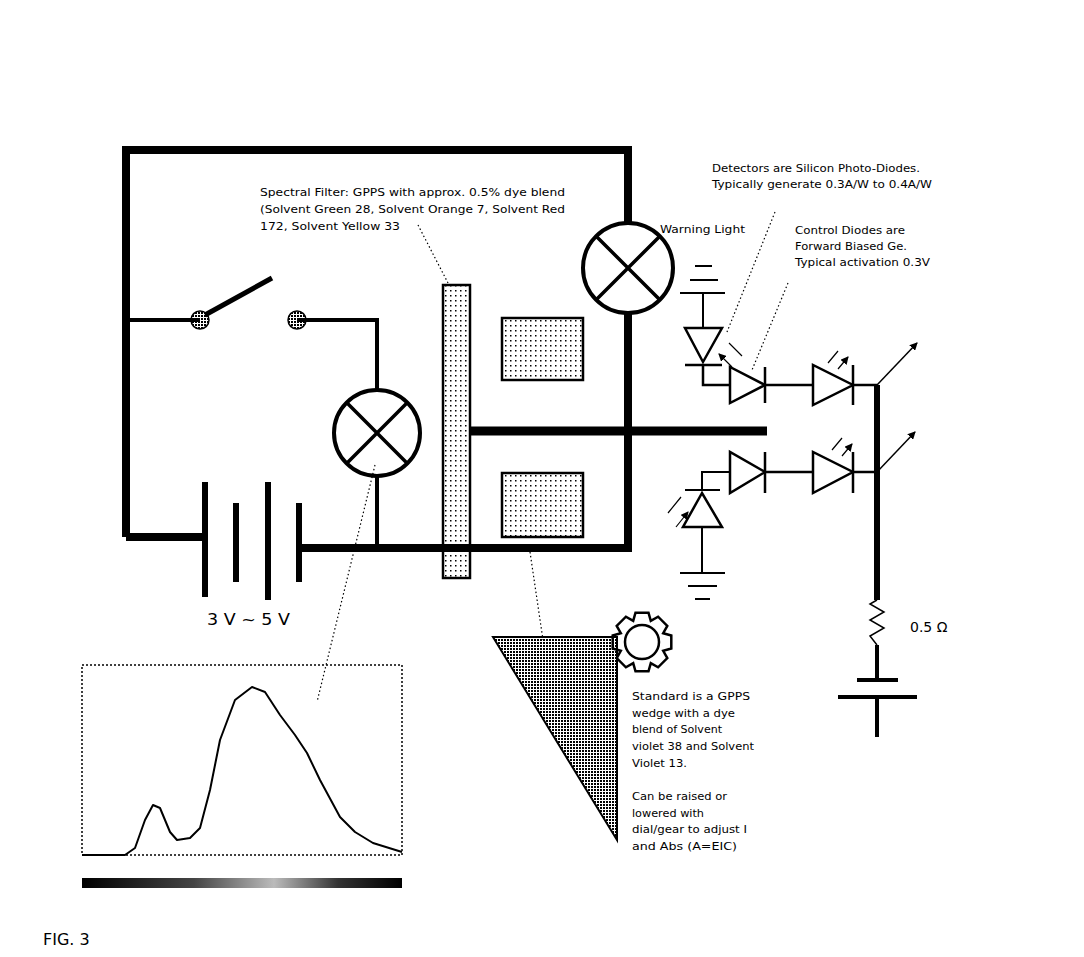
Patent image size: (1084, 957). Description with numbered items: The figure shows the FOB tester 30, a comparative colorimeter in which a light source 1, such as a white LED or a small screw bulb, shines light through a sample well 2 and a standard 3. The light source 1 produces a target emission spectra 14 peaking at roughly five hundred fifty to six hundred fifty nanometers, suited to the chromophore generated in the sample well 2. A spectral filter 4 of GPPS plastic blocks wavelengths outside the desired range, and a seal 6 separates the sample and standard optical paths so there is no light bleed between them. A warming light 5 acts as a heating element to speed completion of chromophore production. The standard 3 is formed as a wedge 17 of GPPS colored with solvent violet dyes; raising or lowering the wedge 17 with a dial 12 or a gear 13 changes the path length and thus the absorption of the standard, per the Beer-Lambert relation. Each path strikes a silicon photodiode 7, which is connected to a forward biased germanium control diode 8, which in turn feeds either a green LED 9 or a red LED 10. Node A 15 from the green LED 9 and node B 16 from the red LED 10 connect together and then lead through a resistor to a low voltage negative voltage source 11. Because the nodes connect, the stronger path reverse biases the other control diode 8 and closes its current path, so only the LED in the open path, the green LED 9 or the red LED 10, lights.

The FOB tester 30 is at (357, 108).
The light source 1 is at (377, 469).
The sample well 2 is at (542, 349).
The standard 3 is at (542, 505).
The spectral filter 4 is at (456, 431).
The warming light 5 is at (628, 268).
The seal 6 is at (618, 416).
The silicon photodiode 7 is at (702, 432).
The control diode 8 is at (771, 430).
The green LED 9 is at (840, 363).
The red LED 10 is at (836, 476).
The low voltage negative voltage source 11 is at (899, 691).
The dial 12 is at (696, 643).
The gear 13 is at (696, 643).
The target emission spectra 14 is at (222, 676).
The node A 15 is at (917, 351).
The node B 16 is at (919, 439).
The wedge 17 is at (555, 724).